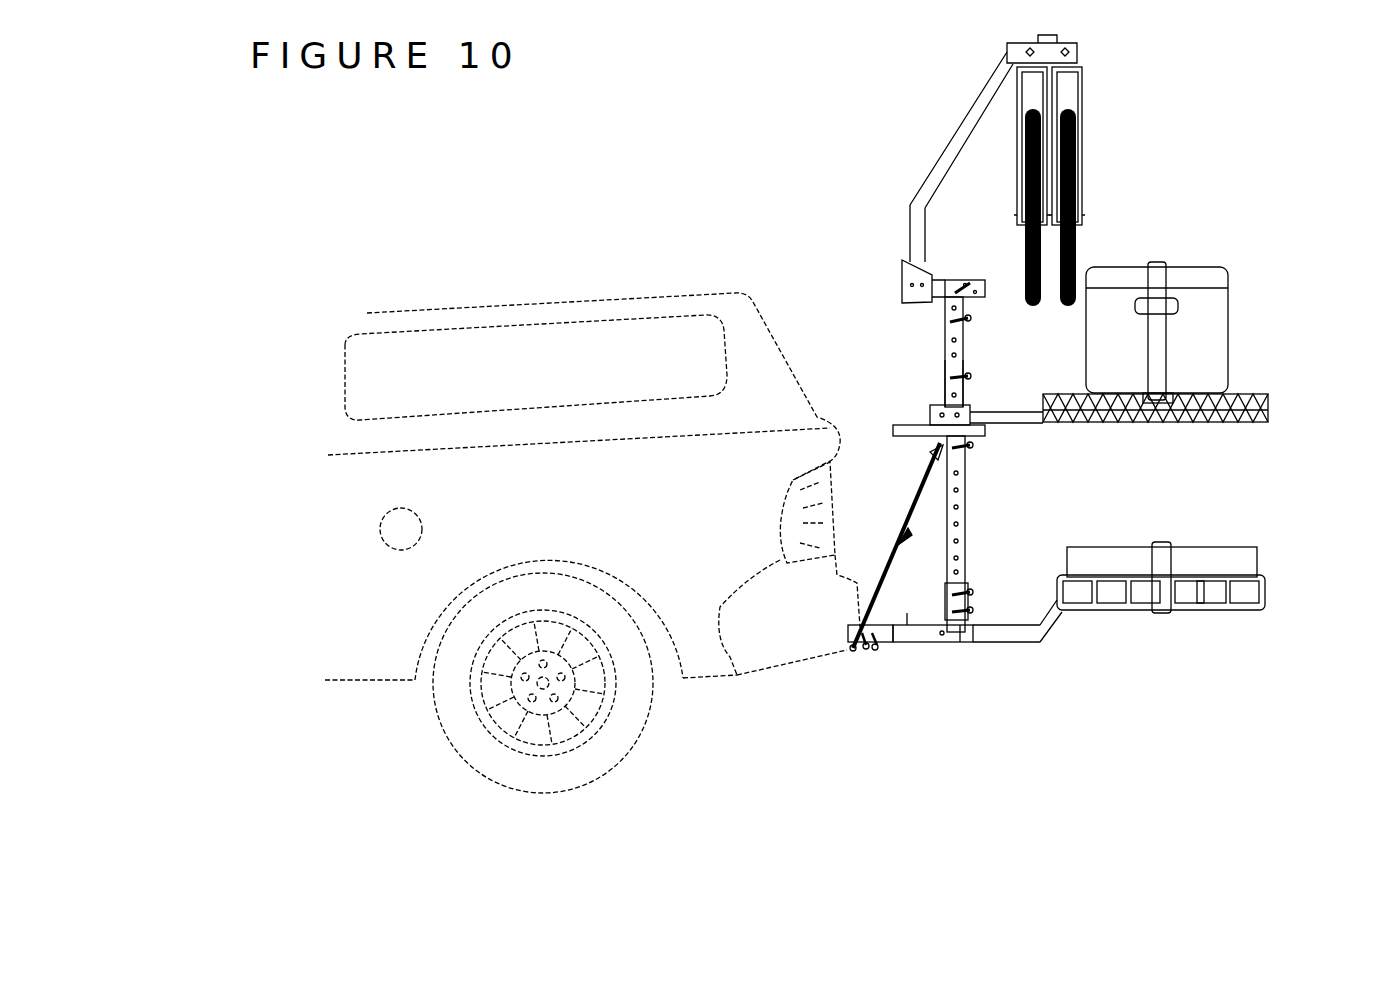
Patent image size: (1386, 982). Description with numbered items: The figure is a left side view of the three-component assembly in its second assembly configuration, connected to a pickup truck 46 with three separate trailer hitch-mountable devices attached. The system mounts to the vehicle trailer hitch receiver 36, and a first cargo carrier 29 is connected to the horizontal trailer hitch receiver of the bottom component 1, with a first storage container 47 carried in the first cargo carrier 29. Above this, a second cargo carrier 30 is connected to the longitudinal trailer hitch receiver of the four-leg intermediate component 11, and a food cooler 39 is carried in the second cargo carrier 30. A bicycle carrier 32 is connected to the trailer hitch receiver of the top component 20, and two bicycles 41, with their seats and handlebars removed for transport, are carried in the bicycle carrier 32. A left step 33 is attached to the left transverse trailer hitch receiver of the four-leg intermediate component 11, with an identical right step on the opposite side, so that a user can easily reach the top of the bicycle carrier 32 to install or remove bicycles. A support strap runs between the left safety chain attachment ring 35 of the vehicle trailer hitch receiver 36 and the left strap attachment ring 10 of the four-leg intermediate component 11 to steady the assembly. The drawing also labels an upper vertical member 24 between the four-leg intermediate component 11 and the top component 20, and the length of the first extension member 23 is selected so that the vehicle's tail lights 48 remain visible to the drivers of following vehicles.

The bottom component 1 is at (923, 640).
The left strap attachment ring 10 is at (935, 448).
The four-leg intermediate component 11 is at (940, 407).
The top component 20 is at (967, 280).
The first extension member 23 is at (965, 528).
The upper vertical post 24 is at (965, 345).
The first cargo carrier 29 is at (1265, 590).
The second cargo carrier 30 is at (1250, 394).
The bicycle carrier 32 is at (925, 190).
The left step 33 is at (930, 415).
The left safety chain attachment ring 35 is at (852, 652).
The vehicle trailer hitch receiver 36 is at (1158, 262).
The food cooler 39 is at (1218, 328).
The bicycles 41 is at (1082, 95).
The pickup truck 46 is at (650, 487).
The first storage container 47 is at (1225, 556).
The tail lights 48 is at (737, 675).